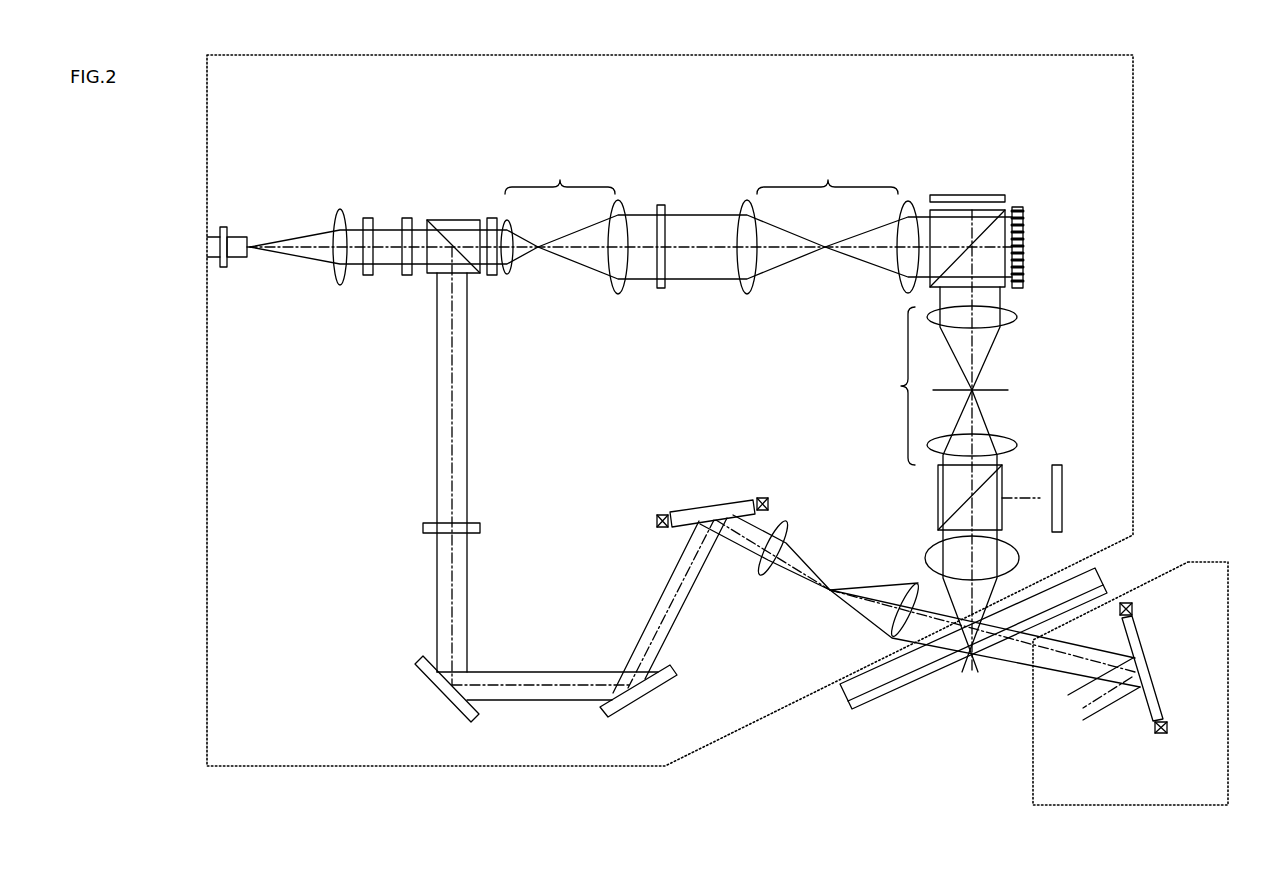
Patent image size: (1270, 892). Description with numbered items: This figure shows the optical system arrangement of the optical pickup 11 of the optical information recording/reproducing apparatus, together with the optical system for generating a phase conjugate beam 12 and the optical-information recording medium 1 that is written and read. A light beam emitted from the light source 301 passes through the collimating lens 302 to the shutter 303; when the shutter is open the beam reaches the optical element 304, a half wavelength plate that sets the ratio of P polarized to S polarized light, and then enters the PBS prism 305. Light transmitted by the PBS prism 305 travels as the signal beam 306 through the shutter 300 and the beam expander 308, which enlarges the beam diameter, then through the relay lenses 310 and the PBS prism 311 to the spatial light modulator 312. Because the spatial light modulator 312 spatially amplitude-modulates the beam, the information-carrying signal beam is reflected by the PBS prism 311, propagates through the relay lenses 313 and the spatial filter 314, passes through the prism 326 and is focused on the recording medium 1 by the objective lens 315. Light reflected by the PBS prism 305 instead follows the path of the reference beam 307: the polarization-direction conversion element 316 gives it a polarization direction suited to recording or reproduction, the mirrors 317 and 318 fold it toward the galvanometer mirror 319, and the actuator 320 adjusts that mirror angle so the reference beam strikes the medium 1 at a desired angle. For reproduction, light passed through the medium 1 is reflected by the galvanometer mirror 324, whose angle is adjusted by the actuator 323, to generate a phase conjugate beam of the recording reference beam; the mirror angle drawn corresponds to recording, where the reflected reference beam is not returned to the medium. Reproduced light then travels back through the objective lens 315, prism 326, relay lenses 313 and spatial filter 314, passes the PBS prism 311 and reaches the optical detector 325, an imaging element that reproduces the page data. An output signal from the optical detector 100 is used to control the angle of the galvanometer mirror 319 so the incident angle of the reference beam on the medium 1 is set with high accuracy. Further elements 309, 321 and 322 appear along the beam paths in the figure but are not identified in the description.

The optical-information recording medium 1 is at (847, 705).
The optical pickup 11 is at (256, 767).
The optical system for generating a phase conjugate beam 12 is at (1053, 806).
The optical detector 100 is at (1061, 468).
The shutter 300 is at (493, 218).
The light source 301 is at (233, 228).
The collimating lens 302 is at (340, 207).
The shutter 303 is at (370, 218).
The optical element 304 is at (408, 218).
The PBS prism 305 is at (427, 272).
The signal beam 306 is at (697, 227).
The reference beam 307 is at (467, 380).
The beam expander 308 is at (566, 225).
The optical plate 309 is at (663, 290).
The relay lenses 310 is at (828, 225).
The PBS prism 311 is at (942, 230).
The spatial light modulator 312 is at (1025, 262).
The relay lenses 313 is at (938, 385).
The spatial filter 314 is at (1008, 390).
The objective lens 315 is at (1018, 560).
The polarization-direction conversion element 316 is at (423, 525).
The mirror 317 is at (436, 692).
The mirror 318 is at (632, 703).
The galvanometer mirror 319 is at (740, 500).
The actuator 320 is at (770, 500).
The lens 321 is at (757, 575).
The lens 322 is at (910, 590).
The actuator 323 is at (1157, 735).
The galvanometer mirror 324 is at (1150, 670).
The optical detector 325 is at (980, 195).
The prism 326 is at (938, 490).